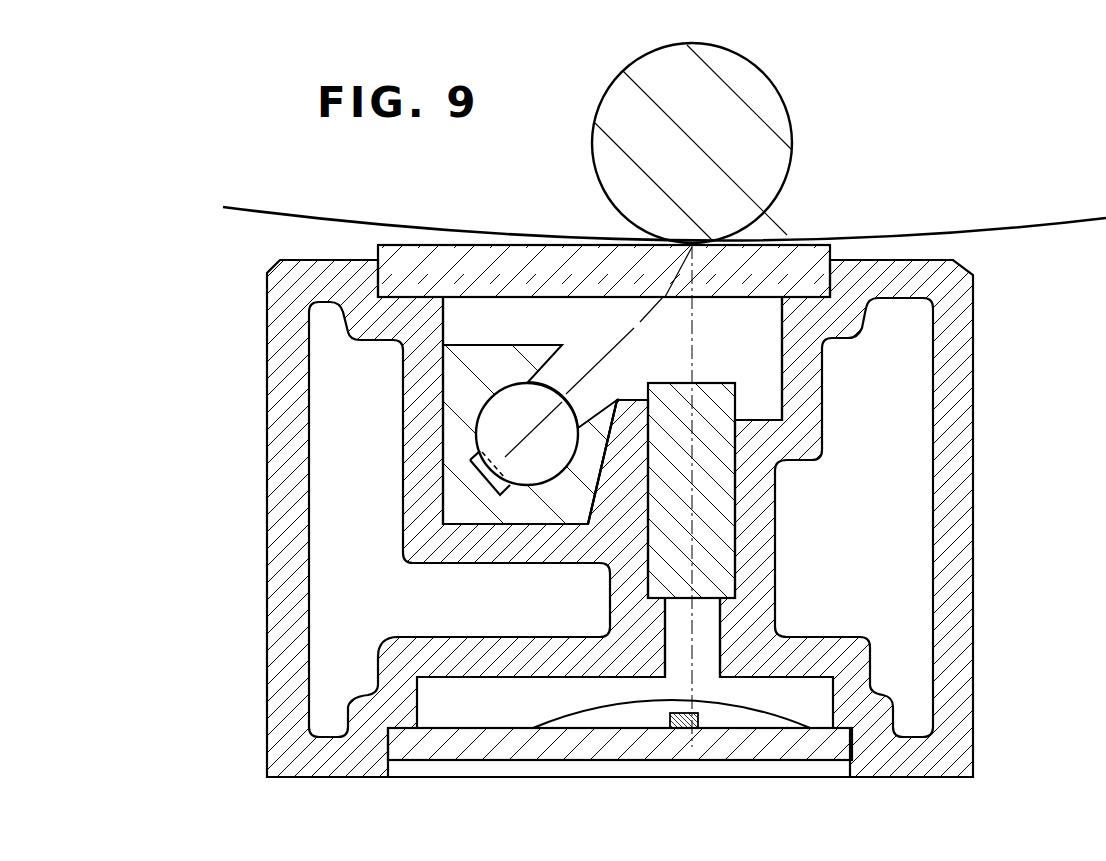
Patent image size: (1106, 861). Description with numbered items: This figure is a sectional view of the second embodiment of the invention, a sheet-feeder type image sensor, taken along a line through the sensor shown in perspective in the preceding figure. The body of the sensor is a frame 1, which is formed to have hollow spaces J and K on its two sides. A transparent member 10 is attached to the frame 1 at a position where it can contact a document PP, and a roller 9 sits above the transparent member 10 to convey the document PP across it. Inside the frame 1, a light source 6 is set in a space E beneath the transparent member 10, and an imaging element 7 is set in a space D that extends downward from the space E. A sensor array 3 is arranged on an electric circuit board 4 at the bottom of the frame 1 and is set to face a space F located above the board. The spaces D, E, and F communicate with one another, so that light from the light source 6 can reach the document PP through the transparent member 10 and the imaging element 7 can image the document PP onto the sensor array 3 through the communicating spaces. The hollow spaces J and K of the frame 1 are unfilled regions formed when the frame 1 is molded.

The frame 1 is at (297, 612).
The sensor array 3 is at (675, 728).
The electric circuit board 4 is at (727, 750).
The light source 6 is at (455, 448).
The imaging element 7 is at (718, 487).
The roller 9 is at (782, 152).
The transparent member 10 is at (450, 262).
The space E is at (492, 327).
The hollow space J is at (350, 533).
The hollow space K is at (887, 625).
The space D is at (735, 570).
The space F is at (800, 708).
The document PP is at (1077, 218).